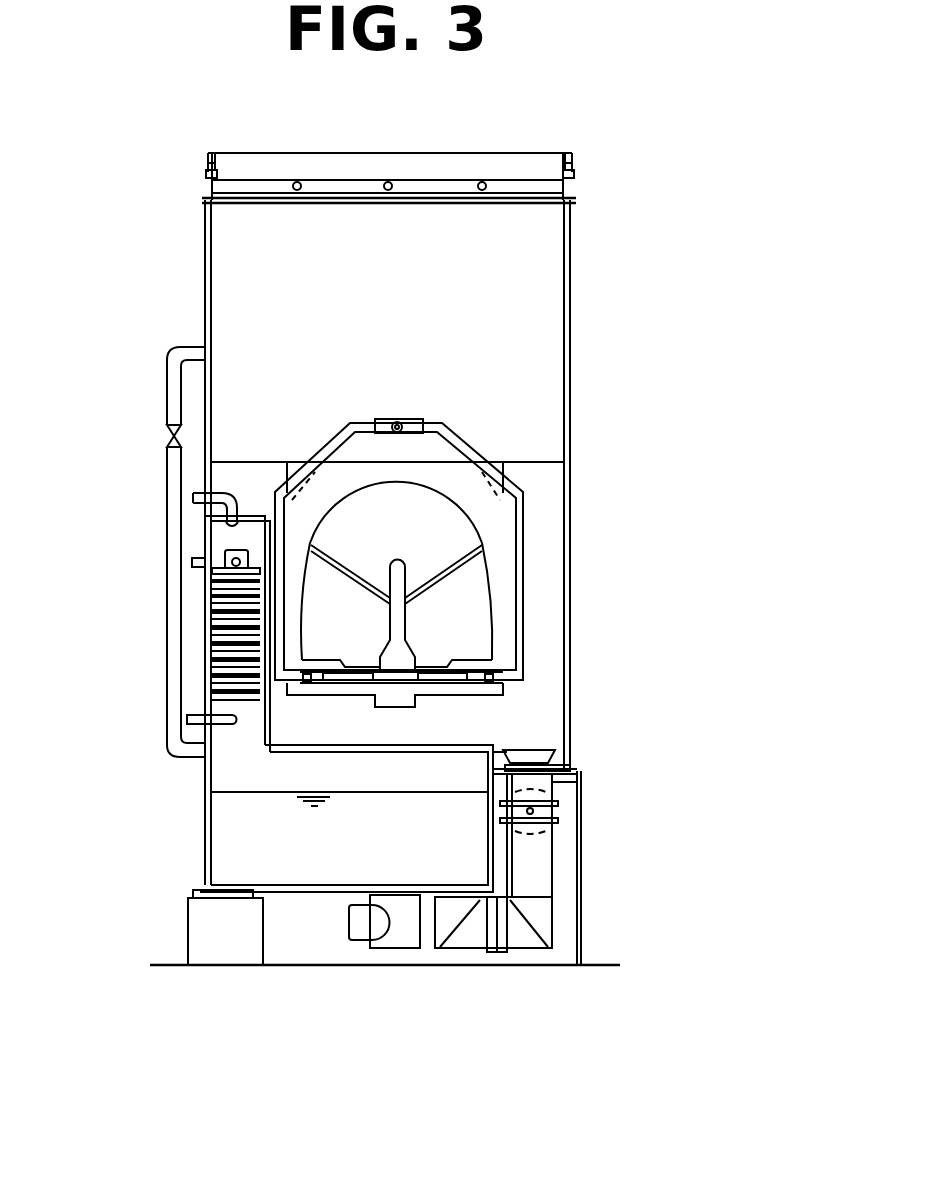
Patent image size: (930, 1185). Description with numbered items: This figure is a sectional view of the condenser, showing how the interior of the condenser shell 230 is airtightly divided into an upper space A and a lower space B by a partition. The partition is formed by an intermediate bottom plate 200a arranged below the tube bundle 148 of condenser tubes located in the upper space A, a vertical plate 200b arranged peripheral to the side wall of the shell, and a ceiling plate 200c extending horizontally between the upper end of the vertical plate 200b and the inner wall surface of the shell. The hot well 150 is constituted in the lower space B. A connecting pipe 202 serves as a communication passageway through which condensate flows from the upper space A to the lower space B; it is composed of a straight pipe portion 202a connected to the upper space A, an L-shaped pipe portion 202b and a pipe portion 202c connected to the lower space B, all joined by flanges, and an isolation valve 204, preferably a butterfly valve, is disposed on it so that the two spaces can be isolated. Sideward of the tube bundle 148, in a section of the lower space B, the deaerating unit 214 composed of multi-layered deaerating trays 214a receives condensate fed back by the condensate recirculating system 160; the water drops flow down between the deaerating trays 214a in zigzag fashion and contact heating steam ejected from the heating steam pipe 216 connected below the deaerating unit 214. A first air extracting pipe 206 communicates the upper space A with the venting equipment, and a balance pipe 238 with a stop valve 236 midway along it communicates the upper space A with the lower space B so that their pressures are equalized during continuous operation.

The shell of the condenser 230 is at (570, 350).
The stop valve 236 is at (167, 432).
The balance pipe 238 is at (167, 520).
The first air extracting pipe 206 is at (193, 493).
The ceiling plate 200c is at (256, 516).
The vertical plate 200b is at (262, 722).
The intermediate bottom plate 200a is at (415, 743).
The condensate recirculating system 160 is at (192, 562).
The deaerating unit 214 is at (197, 637).
The deaerating trays 214a is at (205, 612).
The heating steam pipe 216 is at (190, 706).
The tube bundle 148 is at (470, 517).
The upper space A is at (535, 623).
The lower space B is at (233, 773).
The hot well 150 is at (233, 850).
The connecting pipe 202 is at (562, 860).
The straight pipe portion 202a is at (573, 787).
The L-shaped pipe portion 202b is at (550, 888).
The pipe portion 202c is at (468, 945).
The isolation valve 204 is at (560, 810).